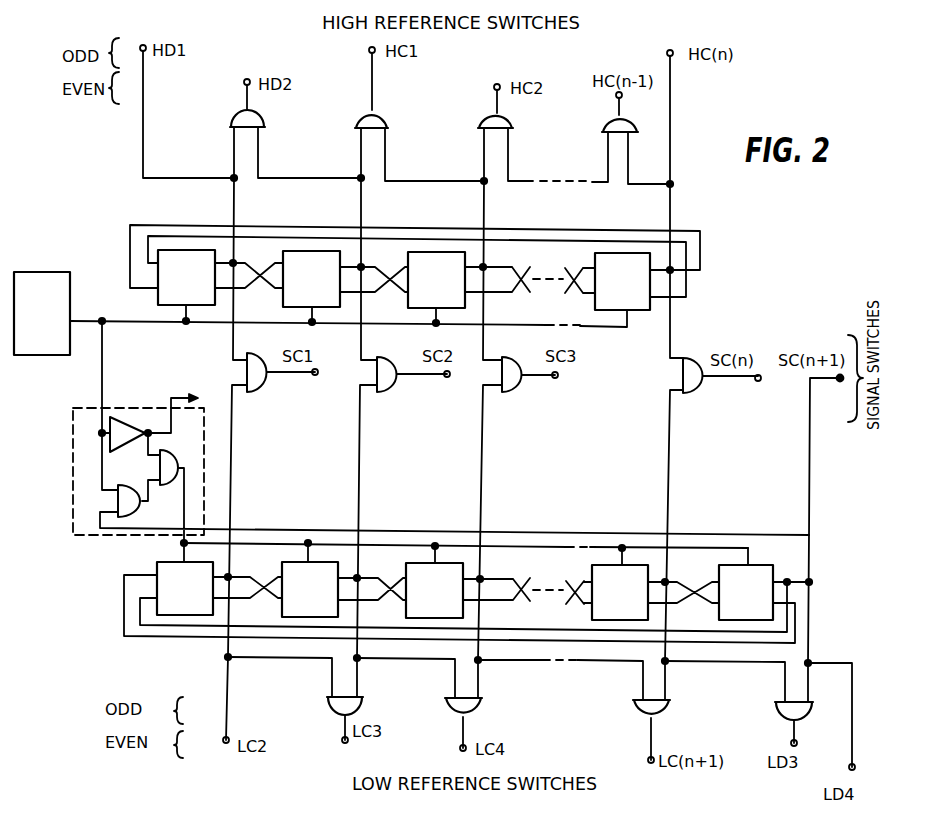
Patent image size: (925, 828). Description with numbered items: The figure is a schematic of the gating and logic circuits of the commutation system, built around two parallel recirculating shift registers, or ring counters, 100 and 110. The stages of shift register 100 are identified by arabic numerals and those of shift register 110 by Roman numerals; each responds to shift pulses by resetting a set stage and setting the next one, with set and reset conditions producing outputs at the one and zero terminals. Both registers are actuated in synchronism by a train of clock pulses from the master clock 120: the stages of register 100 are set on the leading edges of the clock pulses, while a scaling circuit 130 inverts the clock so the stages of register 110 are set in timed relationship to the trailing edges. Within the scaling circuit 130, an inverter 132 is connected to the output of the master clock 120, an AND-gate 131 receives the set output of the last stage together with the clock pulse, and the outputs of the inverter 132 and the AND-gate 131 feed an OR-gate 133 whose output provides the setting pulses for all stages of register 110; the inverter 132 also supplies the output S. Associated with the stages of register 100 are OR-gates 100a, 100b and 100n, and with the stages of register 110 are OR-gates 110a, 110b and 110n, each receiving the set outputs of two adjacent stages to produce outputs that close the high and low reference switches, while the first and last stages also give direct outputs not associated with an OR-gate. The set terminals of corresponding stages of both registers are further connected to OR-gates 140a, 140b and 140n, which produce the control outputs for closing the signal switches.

The shift register 100 is at (78, 244).
The OR-gate 100a is at (264, 128).
The OR-gate 100b is at (389, 128).
The OR-gate 100n is at (603, 129).
The shift register 110 is at (70, 602).
The OR-gate 110a is at (328, 698).
The OR-gate 110b is at (448, 699).
The OR-gate 110n is at (778, 706).
The master clock 120 is at (66, 300).
The scaling circuit 130 is at (157, 408).
The AND-gate 131 is at (140, 507).
The inverter 132 is at (129, 428).
The OR-gate 133 is at (176, 458).
The OR-gate 140a is at (259, 389).
The OR-gate 140b is at (389, 389).
The OR-gate 140n is at (692, 390).